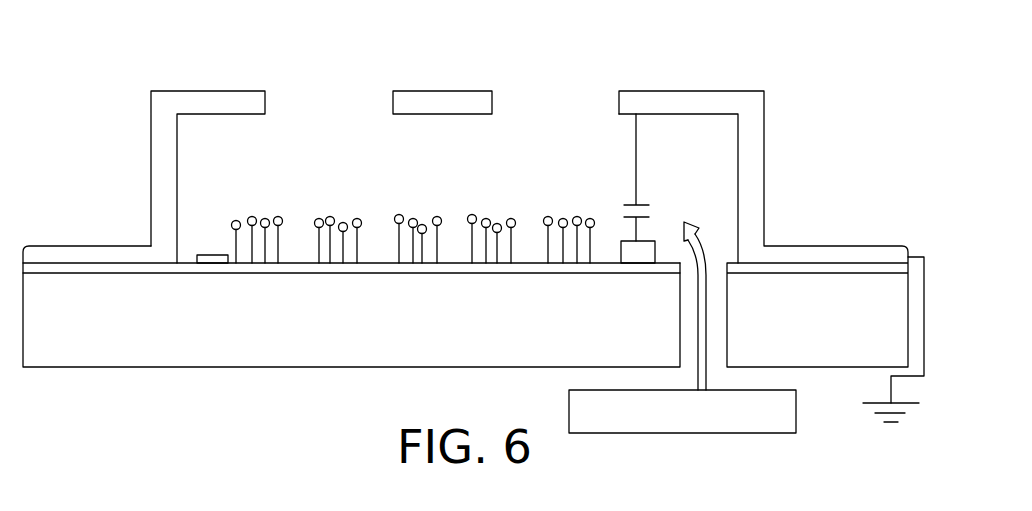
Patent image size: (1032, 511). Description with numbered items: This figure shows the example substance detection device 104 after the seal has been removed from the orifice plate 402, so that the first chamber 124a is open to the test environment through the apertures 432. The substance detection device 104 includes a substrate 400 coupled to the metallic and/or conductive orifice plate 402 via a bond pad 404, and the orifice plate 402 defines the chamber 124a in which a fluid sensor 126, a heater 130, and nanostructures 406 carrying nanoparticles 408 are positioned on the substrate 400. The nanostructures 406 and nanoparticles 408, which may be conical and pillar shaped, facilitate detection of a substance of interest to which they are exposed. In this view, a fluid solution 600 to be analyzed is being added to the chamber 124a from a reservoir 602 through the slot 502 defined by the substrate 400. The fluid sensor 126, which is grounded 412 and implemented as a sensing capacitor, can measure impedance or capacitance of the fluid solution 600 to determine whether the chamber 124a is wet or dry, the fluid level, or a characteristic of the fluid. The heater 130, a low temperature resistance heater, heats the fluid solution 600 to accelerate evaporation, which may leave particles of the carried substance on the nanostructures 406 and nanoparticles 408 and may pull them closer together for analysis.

The substance detection device 104 is at (130, 62).
The first chamber 124a is at (446, 165).
The fluid sensor 126 is at (644, 258).
The heater 130 is at (209, 261).
The substrate 400 is at (92, 368).
The orifice plate 402 is at (157, 138).
The bond pad 404 is at (370, 268).
The nanostructures 406 is at (272, 259).
The nanoparticles 408 is at (437, 225).
The ground 412 is at (890, 378).
The apertures 432 is at (333, 110).
The slot 502 is at (722, 347).
The fluid solution 600 is at (703, 305).
The reservoir 602 is at (789, 418).